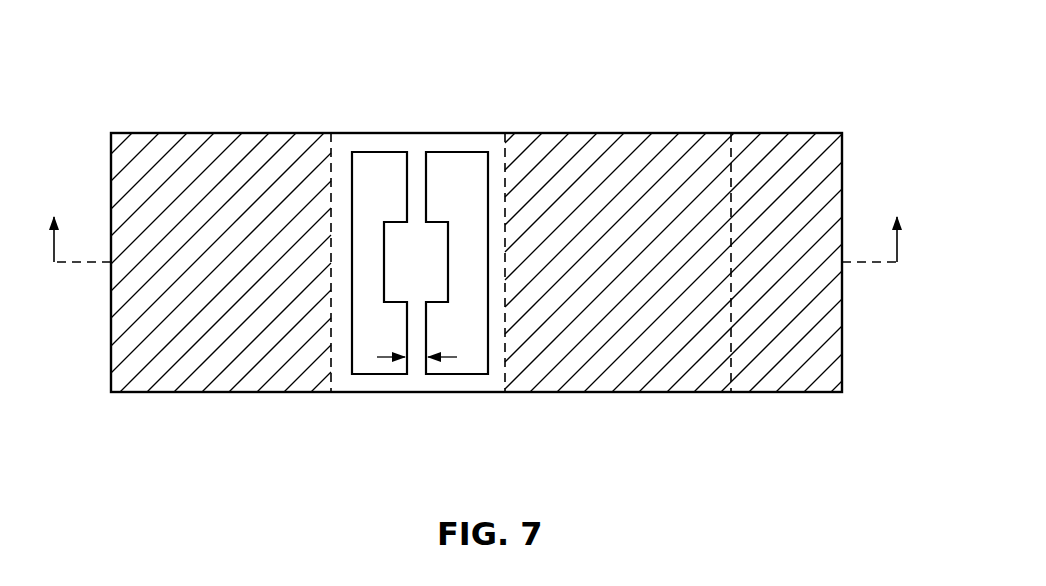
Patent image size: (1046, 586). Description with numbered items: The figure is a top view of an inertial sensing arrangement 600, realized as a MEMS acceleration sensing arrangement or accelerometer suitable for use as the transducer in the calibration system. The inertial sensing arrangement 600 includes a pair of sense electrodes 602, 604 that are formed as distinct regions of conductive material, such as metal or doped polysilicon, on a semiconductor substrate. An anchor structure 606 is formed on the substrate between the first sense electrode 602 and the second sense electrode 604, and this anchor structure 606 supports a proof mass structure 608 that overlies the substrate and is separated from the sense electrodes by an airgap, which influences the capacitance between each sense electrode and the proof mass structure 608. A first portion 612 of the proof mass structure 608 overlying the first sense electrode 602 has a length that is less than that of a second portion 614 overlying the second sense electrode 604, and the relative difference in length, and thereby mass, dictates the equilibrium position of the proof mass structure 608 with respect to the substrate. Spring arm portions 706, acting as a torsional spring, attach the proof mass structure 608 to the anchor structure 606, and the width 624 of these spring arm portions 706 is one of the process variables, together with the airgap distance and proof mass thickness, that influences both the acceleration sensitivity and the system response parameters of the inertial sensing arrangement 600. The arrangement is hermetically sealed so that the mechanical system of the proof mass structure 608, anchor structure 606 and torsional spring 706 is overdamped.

The inertial sensing arrangement 600 is at (123, 80).
The first sense electrode 602 is at (252, 370).
The second sense electrode 604 is at (653, 375).
The anchor structure 606 is at (452, 255).
The proof mass structure 608 is at (849, 167).
The first portion of the proof mass structure 612 is at (360, 172).
The second portion of the proof mass structure 614 is at (483, 172).
The spring arm width 624 is at (453, 360).
The spring arm portions 706 is at (405, 193).